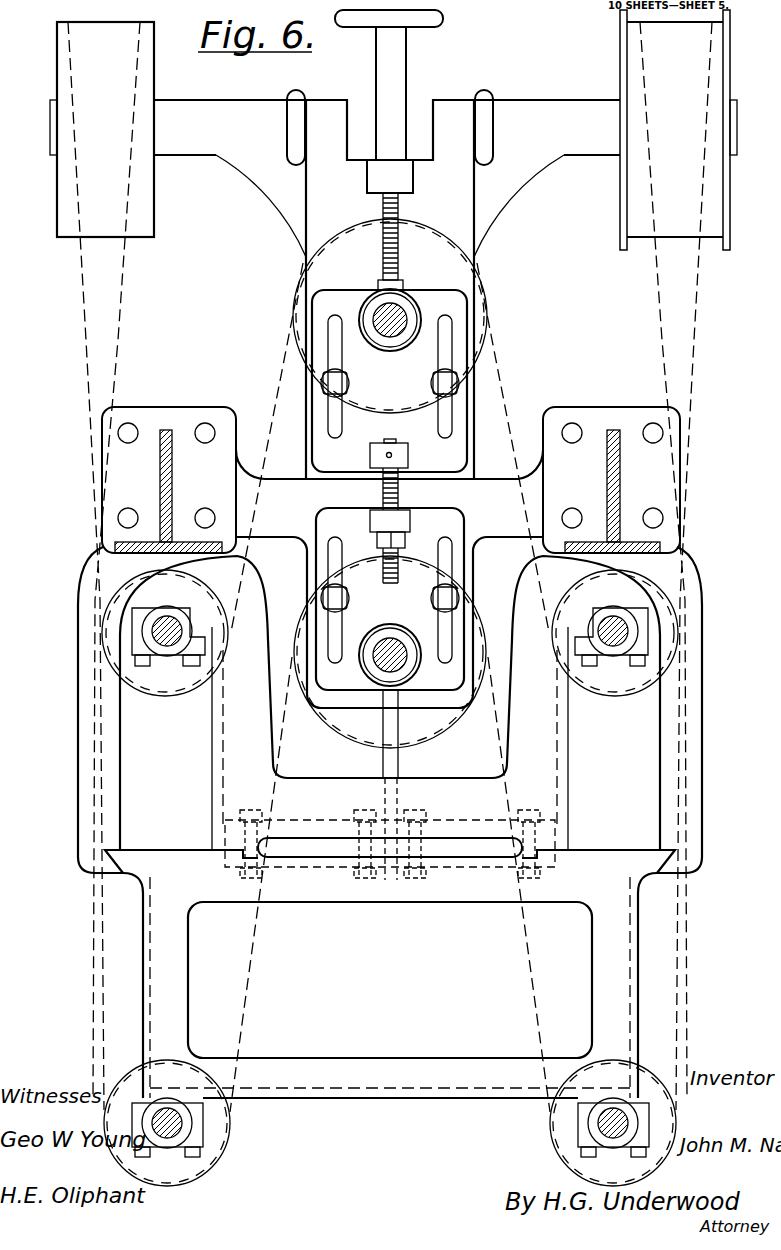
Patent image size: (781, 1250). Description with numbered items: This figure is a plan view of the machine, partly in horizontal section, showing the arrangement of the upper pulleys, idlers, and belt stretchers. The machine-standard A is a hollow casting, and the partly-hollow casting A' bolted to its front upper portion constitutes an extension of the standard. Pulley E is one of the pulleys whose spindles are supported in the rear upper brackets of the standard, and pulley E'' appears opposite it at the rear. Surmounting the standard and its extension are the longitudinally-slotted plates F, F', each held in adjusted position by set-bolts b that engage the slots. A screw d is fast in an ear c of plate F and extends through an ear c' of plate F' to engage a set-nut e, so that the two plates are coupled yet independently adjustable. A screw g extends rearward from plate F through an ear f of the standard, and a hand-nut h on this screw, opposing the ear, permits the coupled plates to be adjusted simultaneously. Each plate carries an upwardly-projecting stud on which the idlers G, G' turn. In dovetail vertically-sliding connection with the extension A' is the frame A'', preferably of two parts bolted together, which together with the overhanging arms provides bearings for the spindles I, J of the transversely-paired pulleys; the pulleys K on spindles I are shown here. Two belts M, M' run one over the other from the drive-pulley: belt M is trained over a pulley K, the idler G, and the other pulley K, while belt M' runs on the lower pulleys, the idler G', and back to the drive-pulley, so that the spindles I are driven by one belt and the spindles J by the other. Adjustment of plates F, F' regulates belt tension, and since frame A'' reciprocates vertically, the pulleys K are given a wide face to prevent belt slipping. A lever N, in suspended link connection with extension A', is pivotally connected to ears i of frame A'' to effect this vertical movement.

The machine-standard A is at (391, 321).
The standard extension A' is at (360, 705).
The frame A'' is at (390, 956).
The pulley E is at (102, 129).
The pulley E'' is at (653, 130).
The longitudinally-slotted plate F is at (389, 381).
The longitudinally-slotted plate F' is at (390, 599).
The idler G is at (413, 316).
The idler G' is at (390, 661).
The spindle I is at (183, 660).
The spindle J is at (170, 1108).
The pulley K is at (160, 698).
The belt M is at (435, 546).
The belt M' is at (390, 567).
The lever N is at (400, 765).
The set-bolt b is at (345, 380).
The ear c is at (401, 453).
The ear c' is at (378, 523).
The screw d is at (400, 490).
The set-nut e is at (407, 540).
The ear f is at (402, 180).
The screw g is at (385, 251).
The hand-nut h is at (393, 78).
The ear i is at (360, 830).